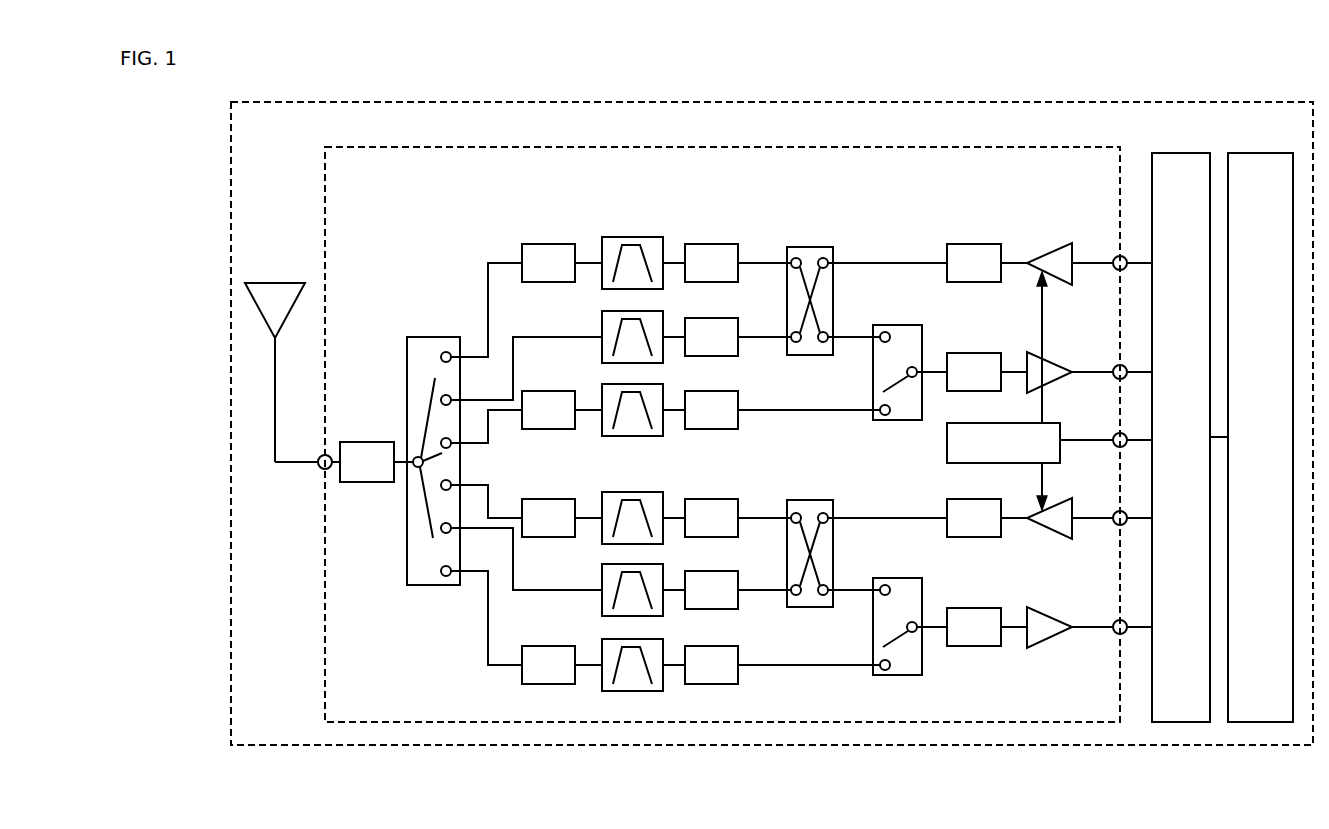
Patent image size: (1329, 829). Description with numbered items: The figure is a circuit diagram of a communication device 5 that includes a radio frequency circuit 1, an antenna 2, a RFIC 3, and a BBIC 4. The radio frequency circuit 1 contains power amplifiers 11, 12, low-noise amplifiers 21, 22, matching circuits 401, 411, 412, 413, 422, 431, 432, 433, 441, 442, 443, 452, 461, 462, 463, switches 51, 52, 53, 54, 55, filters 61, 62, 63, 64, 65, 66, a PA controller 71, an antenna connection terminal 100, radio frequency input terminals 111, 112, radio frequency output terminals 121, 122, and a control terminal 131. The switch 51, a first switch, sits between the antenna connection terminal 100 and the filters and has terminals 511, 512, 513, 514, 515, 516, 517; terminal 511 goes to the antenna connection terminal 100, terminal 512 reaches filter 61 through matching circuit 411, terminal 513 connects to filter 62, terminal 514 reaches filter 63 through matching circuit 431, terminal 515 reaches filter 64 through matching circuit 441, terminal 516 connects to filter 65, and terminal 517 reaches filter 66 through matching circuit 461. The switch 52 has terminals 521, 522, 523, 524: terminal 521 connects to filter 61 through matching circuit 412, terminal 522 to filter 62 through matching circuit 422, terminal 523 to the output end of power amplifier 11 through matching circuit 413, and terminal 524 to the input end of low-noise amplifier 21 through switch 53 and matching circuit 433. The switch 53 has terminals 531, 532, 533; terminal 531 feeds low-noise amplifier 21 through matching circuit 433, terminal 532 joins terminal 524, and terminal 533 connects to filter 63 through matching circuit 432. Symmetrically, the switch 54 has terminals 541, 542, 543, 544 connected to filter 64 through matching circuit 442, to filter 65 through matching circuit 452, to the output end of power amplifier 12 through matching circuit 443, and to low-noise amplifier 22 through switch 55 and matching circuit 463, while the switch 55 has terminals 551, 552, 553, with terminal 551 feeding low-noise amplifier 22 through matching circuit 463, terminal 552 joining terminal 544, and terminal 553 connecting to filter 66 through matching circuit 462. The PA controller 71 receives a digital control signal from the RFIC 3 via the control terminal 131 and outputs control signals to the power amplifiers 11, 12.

The radio frequency circuit 1 is at (402, 147).
The antenna 2 is at (265, 283).
The RFIC 3 is at (1184, 153).
The BBIC 4 is at (1252, 153).
The communication device 5 is at (297, 101).
The power amplifier 11 is at (1057, 248).
The power amplifier 12 is at (1052, 532).
The low-noise amplifier 21 is at (1042, 363).
The low-noise amplifier 22 is at (1042, 615).
The switch 51 is at (433, 459).
The switch 52 is at (811, 292).
The switch 53 is at (905, 370).
The switch 54 is at (810, 547).
The switch 55 is at (905, 625).
The filter 61 is at (662, 250).
The filter 62 is at (662, 323).
The filter 63 is at (662, 395).
The filter 64 is at (662, 501).
The filter 65 is at (662, 577).
The filter 66 is at (662, 649).
The PA controller 71 is at (1010, 421).
The antenna connection terminal 100 is at (322, 468).
The radio frequency input terminal 111 is at (1115, 259).
The radio frequency input terminal 112 is at (1115, 511).
The radio frequency output terminal 121 is at (1115, 368).
The radio frequency output terminal 122 is at (1115, 620).
The control terminal 131 is at (1115, 434).
The matching circuit 401 is at (356, 444).
The matching circuit 411 is at (532, 250).
The matching circuit 412 is at (692, 246).
The matching circuit 413 is at (958, 244).
The matching circuit 422 is at (692, 322).
The matching circuit 431 is at (532, 394).
The matching circuit 432 is at (692, 392).
The matching circuit 433 is at (958, 352).
The matching circuit 441 is at (532, 501).
The matching circuit 442 is at (692, 498).
The matching circuit 443 is at (958, 499).
The matching circuit 452 is at (692, 574).
The matching circuit 461 is at (532, 648).
The matching circuit 462 is at (692, 651).
The matching circuit 463 is at (958, 608).
The terminal 511 is at (413, 475).
The terminal 512 is at (448, 351).
The terminal 513 is at (450, 398).
The terminal 514 is at (452, 445).
The terminal 515 is at (452, 485).
The terminal 516 is at (452, 530).
The terminal 517 is at (449, 576).
The terminal 521 is at (795, 258).
The terminal 522 is at (794, 340).
The terminal 523 is at (827, 260).
The terminal 524 is at (828, 343).
The terminal 531 is at (914, 367).
The terminal 532 is at (881, 331).
The terminal 533 is at (881, 414).
The terminal 541 is at (795, 512).
The terminal 542 is at (794, 594).
The terminal 543 is at (827, 515).
The terminal 544 is at (828, 596).
The terminal 551 is at (914, 622).
The terminal 552 is at (881, 585).
The terminal 553 is at (881, 669).